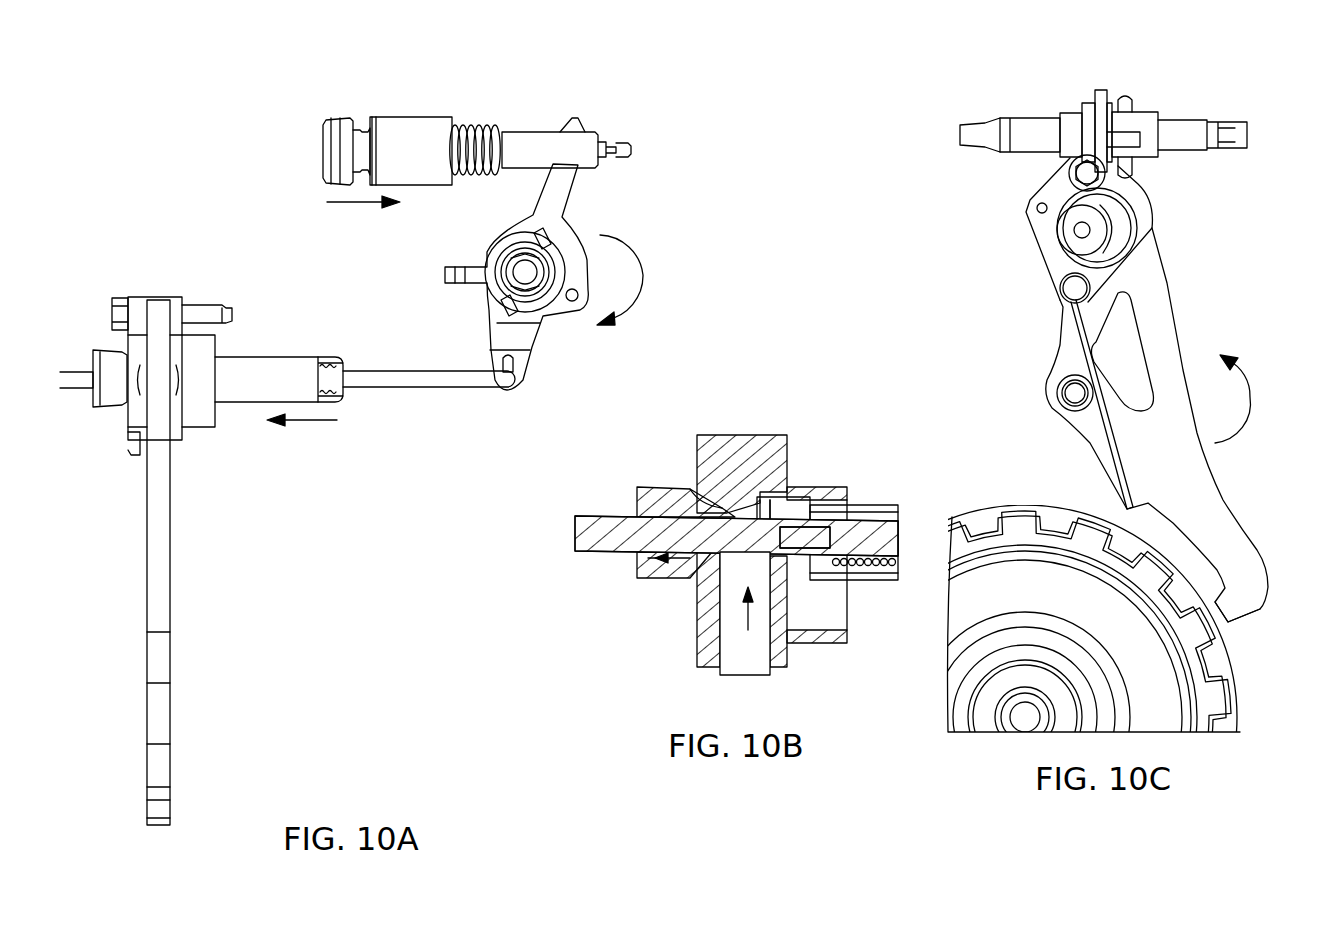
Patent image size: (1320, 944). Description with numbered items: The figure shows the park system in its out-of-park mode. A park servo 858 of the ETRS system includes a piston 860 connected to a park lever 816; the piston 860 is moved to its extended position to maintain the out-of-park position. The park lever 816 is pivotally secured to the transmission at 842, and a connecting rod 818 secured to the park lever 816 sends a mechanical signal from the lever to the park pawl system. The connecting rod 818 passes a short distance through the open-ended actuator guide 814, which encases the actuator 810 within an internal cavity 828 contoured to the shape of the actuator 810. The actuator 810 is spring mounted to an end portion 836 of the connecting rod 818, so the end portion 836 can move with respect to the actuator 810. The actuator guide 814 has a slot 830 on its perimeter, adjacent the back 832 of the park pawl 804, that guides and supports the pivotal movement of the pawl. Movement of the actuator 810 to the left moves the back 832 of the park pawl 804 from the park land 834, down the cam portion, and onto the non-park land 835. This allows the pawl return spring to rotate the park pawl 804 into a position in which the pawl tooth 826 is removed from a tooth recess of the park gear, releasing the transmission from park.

In FIG. 10C, the park pawl 804 is at (1212, 494).
In FIG. 10A, the actuator 810 is at (285, 362).
In FIG. 10A, the actuator guide 814 is at (170, 298).
In FIG. 10B, the actuator guide 814 is at (733, 440).
In FIG. 10C, the actuator guide 814 is at (1133, 202).
In FIG. 10A, the park lever 816 is at (562, 200).
In FIG. 10A, the connecting rod 818 is at (420, 385).
In FIG. 10C, the pawl tooth 826 is at (1235, 612).
In FIG. 10B, the internal cavity 828 is at (830, 612).
In FIG. 10A, the slot 830 is at (160, 318).
In FIG. 10B, the slot 830 is at (715, 643).
In FIG. 10C, the back of the pawl 832 is at (1072, 345).
In FIG. 10B, the park land 834 is at (672, 495).
In FIG. 10B, the non-park land 835 is at (795, 515).
In FIG. 10B, the end portion of the connecting rod 836 is at (580, 540).
In FIG. 10A, the pivot 842 is at (543, 300).
In FIG. 10A, the park servo 858 is at (465, 100).
In FIG. 10A, the piston 860 is at (540, 148).